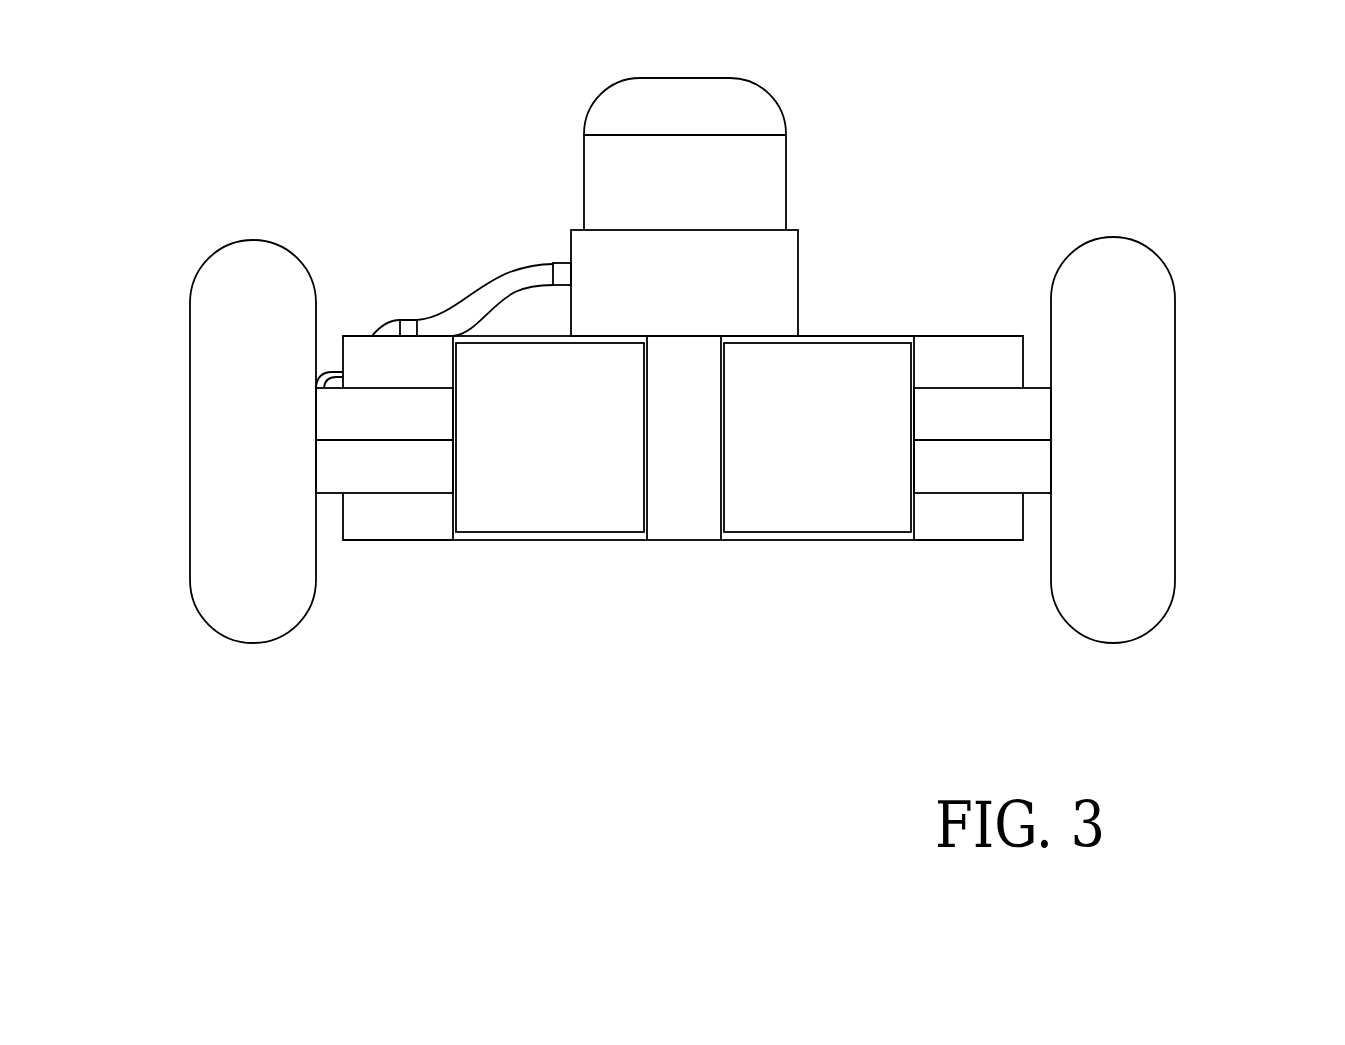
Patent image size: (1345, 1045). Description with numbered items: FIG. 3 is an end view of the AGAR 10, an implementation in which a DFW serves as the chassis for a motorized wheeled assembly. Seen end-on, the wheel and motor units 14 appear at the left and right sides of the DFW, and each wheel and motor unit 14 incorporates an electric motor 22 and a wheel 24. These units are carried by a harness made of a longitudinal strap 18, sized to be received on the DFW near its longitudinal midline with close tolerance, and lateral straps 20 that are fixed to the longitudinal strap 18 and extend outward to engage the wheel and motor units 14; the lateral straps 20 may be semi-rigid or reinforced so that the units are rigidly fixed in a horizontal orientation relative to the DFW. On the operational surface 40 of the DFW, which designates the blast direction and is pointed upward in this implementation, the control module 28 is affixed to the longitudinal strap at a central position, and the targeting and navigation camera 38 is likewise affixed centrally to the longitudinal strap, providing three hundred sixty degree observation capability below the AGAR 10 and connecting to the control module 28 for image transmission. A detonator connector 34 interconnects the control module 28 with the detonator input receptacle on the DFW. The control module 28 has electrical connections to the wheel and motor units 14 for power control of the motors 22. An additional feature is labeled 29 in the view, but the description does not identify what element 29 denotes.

The AGAR 10 is at (338, 690).
The wheel and motor units 14 is at (703, 459).
The longitudinal strap 18 is at (676, 343).
The lateral straps 20 is at (745, 419).
The electric motor 22 is at (377, 403).
The wheel 24 is at (257, 290).
The control module 28 is at (713, 230).
The housing cover 29 is at (861, 335).
The detonator connector 34 is at (498, 278).
The targeting and navigation camera 38 is at (663, 92).
The operational surface 40 is at (867, 538).